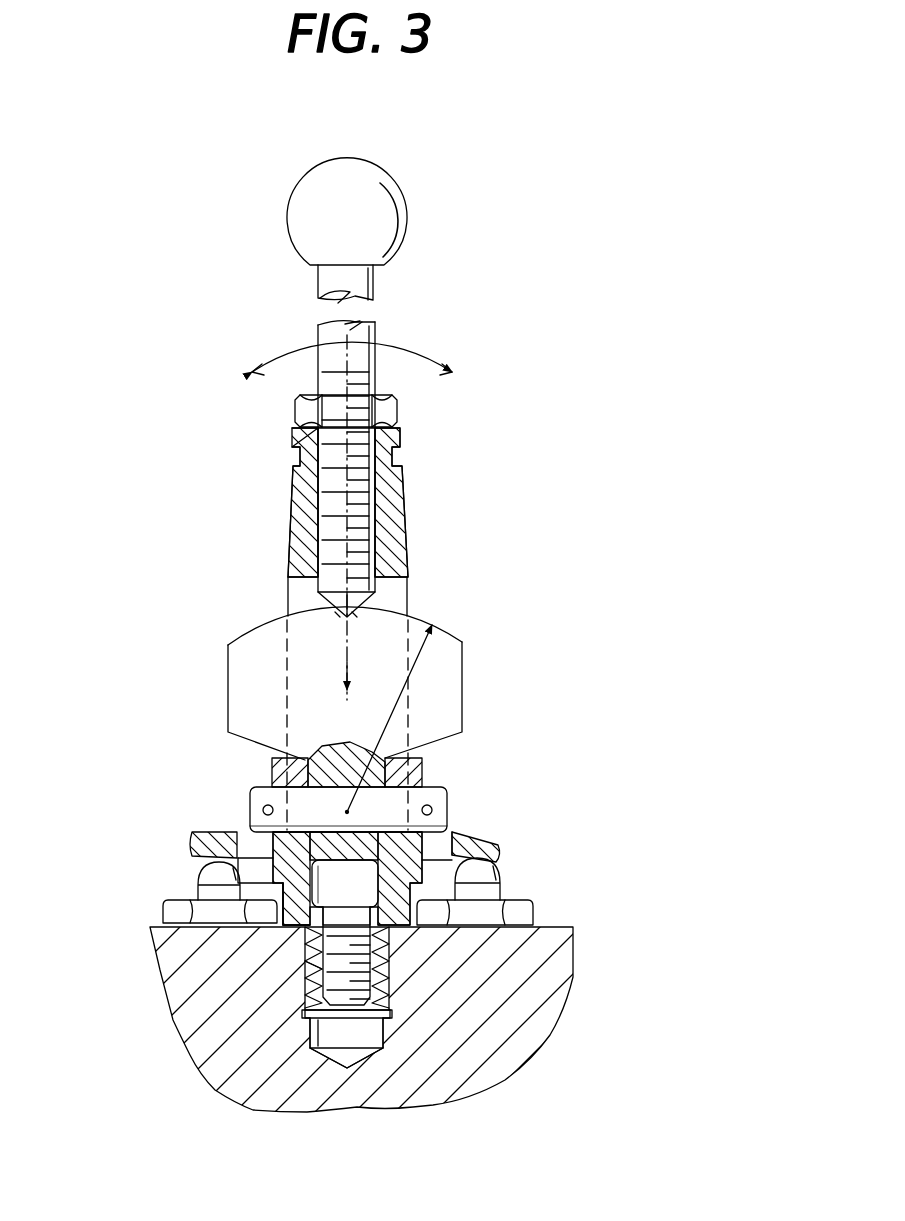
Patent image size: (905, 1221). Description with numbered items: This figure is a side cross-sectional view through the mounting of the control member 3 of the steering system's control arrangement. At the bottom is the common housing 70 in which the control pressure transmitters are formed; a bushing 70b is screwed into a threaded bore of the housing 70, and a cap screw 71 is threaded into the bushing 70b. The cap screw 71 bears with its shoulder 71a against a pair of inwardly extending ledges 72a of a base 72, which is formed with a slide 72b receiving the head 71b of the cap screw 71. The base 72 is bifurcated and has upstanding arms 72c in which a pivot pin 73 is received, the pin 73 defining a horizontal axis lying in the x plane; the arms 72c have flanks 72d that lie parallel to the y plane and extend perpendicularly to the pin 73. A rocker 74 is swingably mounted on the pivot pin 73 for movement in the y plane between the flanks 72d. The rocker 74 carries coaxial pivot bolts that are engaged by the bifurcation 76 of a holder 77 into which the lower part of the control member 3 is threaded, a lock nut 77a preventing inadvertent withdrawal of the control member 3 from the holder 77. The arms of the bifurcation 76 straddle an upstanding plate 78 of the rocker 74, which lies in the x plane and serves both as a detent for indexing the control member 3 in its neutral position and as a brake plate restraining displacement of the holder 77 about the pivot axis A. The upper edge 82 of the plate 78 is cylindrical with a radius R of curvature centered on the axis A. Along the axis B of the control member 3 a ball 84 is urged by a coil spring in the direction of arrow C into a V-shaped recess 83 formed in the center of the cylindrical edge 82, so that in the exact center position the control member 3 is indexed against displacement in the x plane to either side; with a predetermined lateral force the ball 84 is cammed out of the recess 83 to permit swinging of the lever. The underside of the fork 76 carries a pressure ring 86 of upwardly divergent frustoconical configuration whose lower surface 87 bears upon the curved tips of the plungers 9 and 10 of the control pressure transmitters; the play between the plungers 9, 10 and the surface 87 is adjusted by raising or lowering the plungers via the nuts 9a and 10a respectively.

The control member 3 is at (352, 278).
The x plane x is at (366, 354).
The axis of the control member B is at (378, 488).
The lock nut 77a is at (398, 410).
The holder 77 is at (395, 500).
The bifurcation 76 is at (405, 598).
The upper edge of the brake plate 82 is at (445, 632).
The plate 78 is at (447, 662).
The ball 84 is at (340, 612).
The V-shaped recess 83 is at (356, 614).
The arrow C is at (340, 682).
The radius of curvature R is at (395, 725).
The axis A is at (347, 818).
The flanks 72d is at (297, 750).
The upstanding arms 72c is at (272, 772).
The pivot pin 73 is at (447, 800).
The base 72 is at (405, 848).
The rocker 74 is at (312, 882).
The surface 87 is at (200, 855).
The pressure ring 86 is at (472, 840).
The plunger 9 is at (210, 866).
The plunger 10 is at (490, 870).
The head of the cap screw 71b is at (275, 888).
The nut 9a is at (165, 915).
The nut 10a is at (525, 908).
The common housing 70 is at (480, 1030).
The cap screw 71 is at (343, 987).
The bushing 70b is at (378, 1003).
The slide 72b is at (308, 914).
The shoulder of the cap screw 71a is at (316, 985).
The inwardly extending ledges 72a is at (312, 1018).